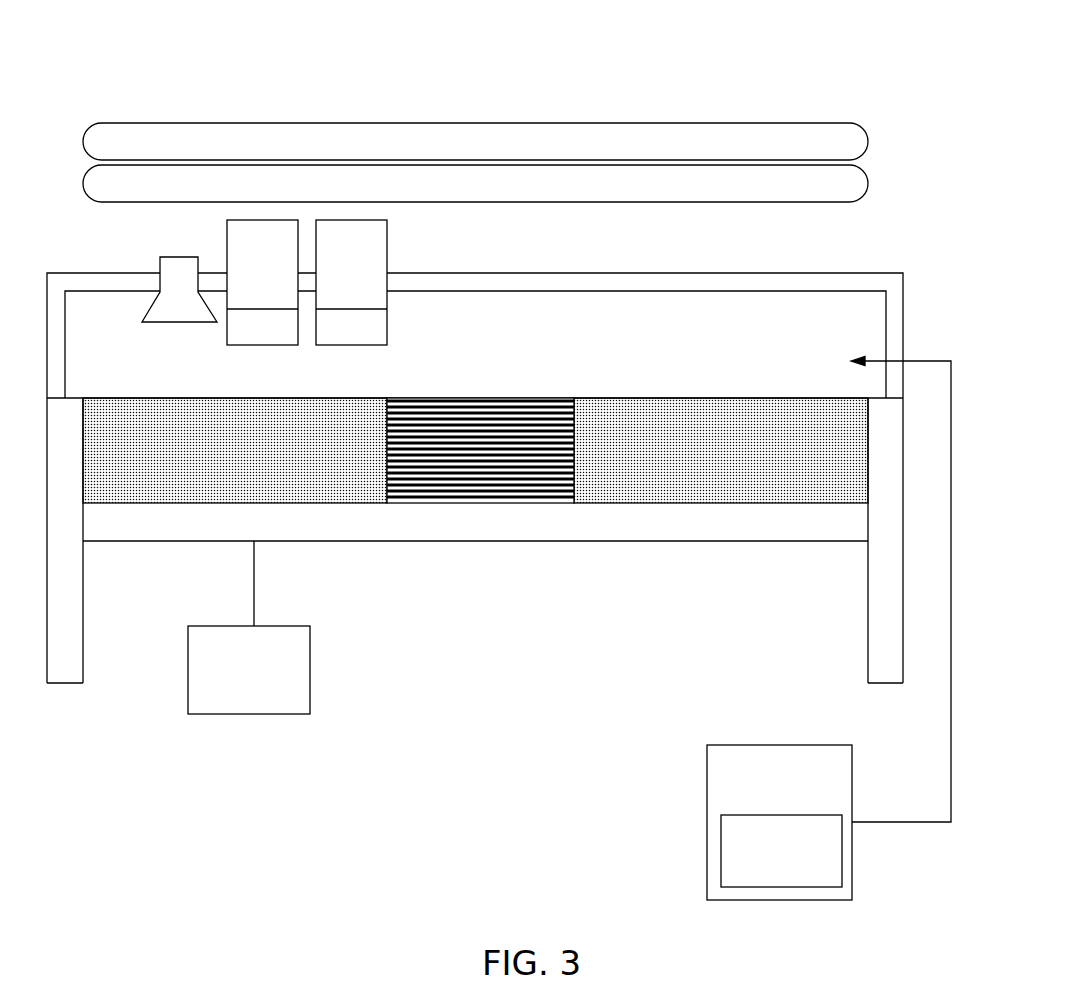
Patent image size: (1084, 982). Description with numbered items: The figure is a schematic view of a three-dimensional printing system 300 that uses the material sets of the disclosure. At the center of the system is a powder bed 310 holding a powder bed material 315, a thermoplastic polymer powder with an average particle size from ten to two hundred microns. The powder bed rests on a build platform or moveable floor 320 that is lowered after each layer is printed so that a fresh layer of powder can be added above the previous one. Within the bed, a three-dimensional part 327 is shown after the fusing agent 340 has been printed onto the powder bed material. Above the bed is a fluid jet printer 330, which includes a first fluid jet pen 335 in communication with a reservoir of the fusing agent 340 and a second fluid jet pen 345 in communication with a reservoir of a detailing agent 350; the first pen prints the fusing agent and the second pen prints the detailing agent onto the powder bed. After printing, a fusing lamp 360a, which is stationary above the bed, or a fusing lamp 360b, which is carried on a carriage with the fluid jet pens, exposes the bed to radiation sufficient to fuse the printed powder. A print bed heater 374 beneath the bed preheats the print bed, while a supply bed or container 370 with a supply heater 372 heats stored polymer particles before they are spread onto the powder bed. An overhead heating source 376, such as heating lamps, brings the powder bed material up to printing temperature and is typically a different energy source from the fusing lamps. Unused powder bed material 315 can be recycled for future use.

The 3-dimensional printing system 300 is at (152, 100).
The powder bed 310 is at (778, 572).
The powder bed material 315 is at (720, 415).
The build platform or moveable floor 320 is at (600, 525).
The 3-dimensional part 327 is at (536, 418).
The fluid jet printer 330 is at (872, 252).
The first fluid jet pen 335 is at (215, 351).
The fusing agent 340 is at (262, 282).
The second fluid jet pen 345 is at (408, 312).
The detailing agent 350 is at (351, 282).
The fusing lamp 360a is at (563, 187).
The fusing lamp 360b is at (175, 273).
The supply bed or container 370 is at (829, 629).
The supply heater 372 is at (781, 851).
The print bed heater 374 is at (249, 670).
The overhead heating source 376 is at (493, 148).